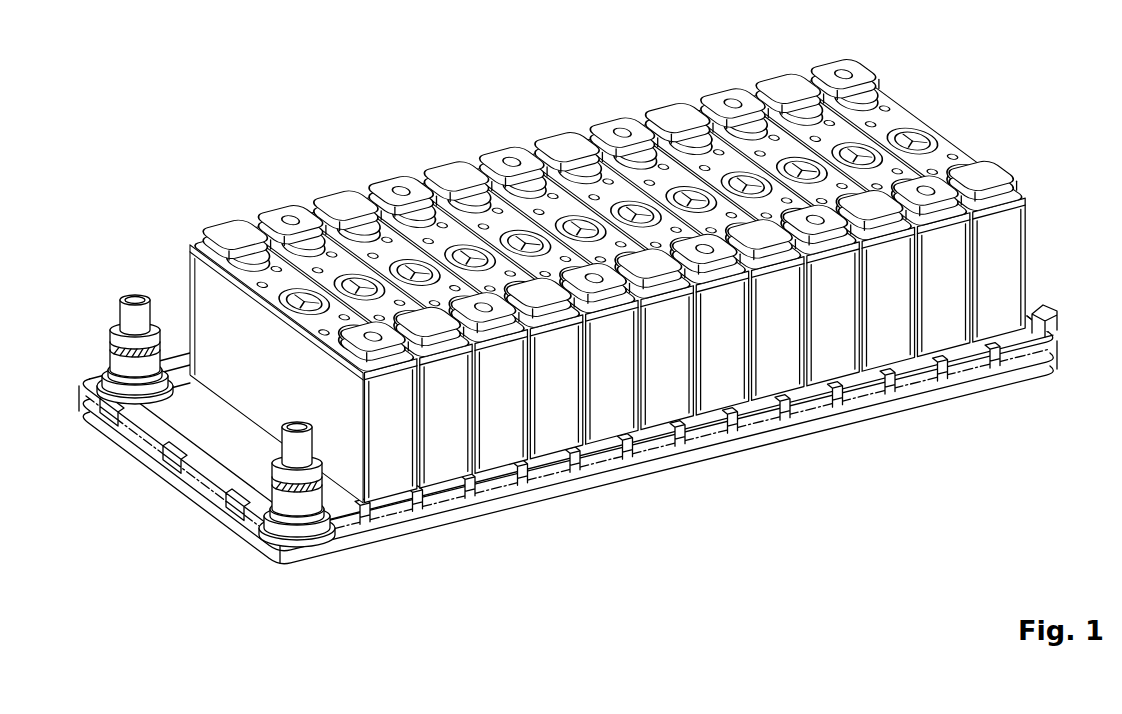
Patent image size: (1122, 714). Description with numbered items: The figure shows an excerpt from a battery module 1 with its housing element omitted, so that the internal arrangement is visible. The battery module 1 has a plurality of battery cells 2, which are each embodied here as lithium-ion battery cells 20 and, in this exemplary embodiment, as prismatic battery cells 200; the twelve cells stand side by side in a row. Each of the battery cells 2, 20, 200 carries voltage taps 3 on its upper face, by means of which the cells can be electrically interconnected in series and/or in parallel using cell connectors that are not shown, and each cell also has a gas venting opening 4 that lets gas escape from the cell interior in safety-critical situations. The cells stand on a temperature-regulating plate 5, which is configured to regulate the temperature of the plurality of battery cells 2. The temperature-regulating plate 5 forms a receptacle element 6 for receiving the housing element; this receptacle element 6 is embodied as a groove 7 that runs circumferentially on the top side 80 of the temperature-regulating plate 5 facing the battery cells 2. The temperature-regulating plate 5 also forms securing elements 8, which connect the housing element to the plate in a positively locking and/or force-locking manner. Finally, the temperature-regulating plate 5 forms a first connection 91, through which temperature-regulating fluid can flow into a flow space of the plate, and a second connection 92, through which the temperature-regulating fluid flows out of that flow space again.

The battery module 1 is at (590, 295).
The battery cells 2 is at (912, 181).
The lithium-ion battery cells 20 is at (912, 181).
The prismatic battery cells 200 is at (912, 181).
The voltage taps 3 is at (853, 84).
The gas venting openings 4 is at (926, 138).
The temperature-regulating plate 5 is at (600, 378).
The receptacle element 6 is at (719, 424).
The groove 7 is at (1058, 326).
The securing elements 8 is at (1044, 316).
The top side 80 is at (183, 434).
The first connection 91 is at (283, 478).
The second connection 92 is at (118, 350).